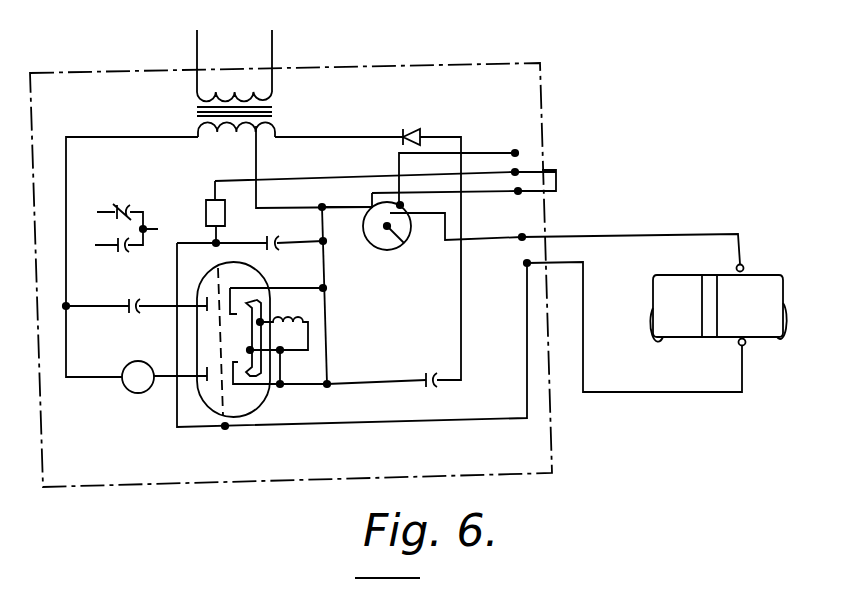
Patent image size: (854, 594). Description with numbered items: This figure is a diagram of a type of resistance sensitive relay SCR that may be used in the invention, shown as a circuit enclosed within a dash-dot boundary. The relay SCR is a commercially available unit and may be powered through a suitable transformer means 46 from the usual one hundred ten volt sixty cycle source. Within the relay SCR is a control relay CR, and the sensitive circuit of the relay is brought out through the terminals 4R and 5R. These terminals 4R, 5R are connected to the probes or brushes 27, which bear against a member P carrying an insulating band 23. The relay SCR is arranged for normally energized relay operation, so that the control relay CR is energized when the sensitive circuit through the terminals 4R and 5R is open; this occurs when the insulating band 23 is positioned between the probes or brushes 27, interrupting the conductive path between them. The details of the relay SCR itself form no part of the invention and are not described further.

The transformer means 46 is at (277, 108).
The resistance sensitive relay SCR is at (417, 58).
The control relay CR is at (151, 343).
The terminal 5R is at (520, 234).
The terminal 4R is at (523, 264).
The pipe P is at (676, 338).
The insulating band 23 is at (708, 283).
The probes 27 is at (745, 265).